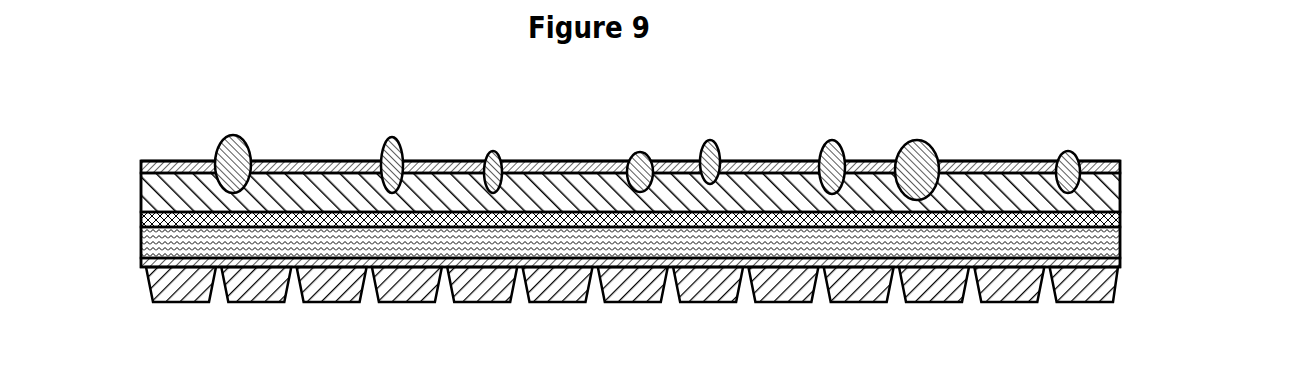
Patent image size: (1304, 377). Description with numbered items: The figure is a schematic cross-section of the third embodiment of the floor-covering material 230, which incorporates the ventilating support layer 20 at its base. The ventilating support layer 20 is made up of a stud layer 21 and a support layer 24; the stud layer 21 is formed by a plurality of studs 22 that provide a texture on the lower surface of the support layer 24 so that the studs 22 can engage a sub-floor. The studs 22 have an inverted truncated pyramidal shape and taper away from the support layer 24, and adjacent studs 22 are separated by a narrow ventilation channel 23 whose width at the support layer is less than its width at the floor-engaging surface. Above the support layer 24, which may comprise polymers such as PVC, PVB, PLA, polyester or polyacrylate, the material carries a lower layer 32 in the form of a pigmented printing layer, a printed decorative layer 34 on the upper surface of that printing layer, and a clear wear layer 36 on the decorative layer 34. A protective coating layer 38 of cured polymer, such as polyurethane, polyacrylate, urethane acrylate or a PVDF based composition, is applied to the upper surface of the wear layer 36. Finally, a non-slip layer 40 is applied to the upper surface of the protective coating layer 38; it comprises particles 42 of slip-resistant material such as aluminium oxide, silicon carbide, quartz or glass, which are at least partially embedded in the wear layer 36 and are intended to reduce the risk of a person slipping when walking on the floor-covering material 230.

The ventilating support layer 20 is at (126, 246).
The stud layer 21 is at (148, 285).
The studs 22 is at (1093, 287).
The narrow ventilation channel 23 is at (663, 300).
The support layer 24 is at (1120, 262).
The lower layer 32 is at (1120, 248).
The printed decorative layer 34 is at (1120, 217).
The wear layer 36 is at (1120, 190).
The protective coating layer 38 is at (997, 160).
The non-slip layer 40 is at (623, 147).
The particles 42 is at (400, 147).
The floor-covering material 230 is at (292, 131).